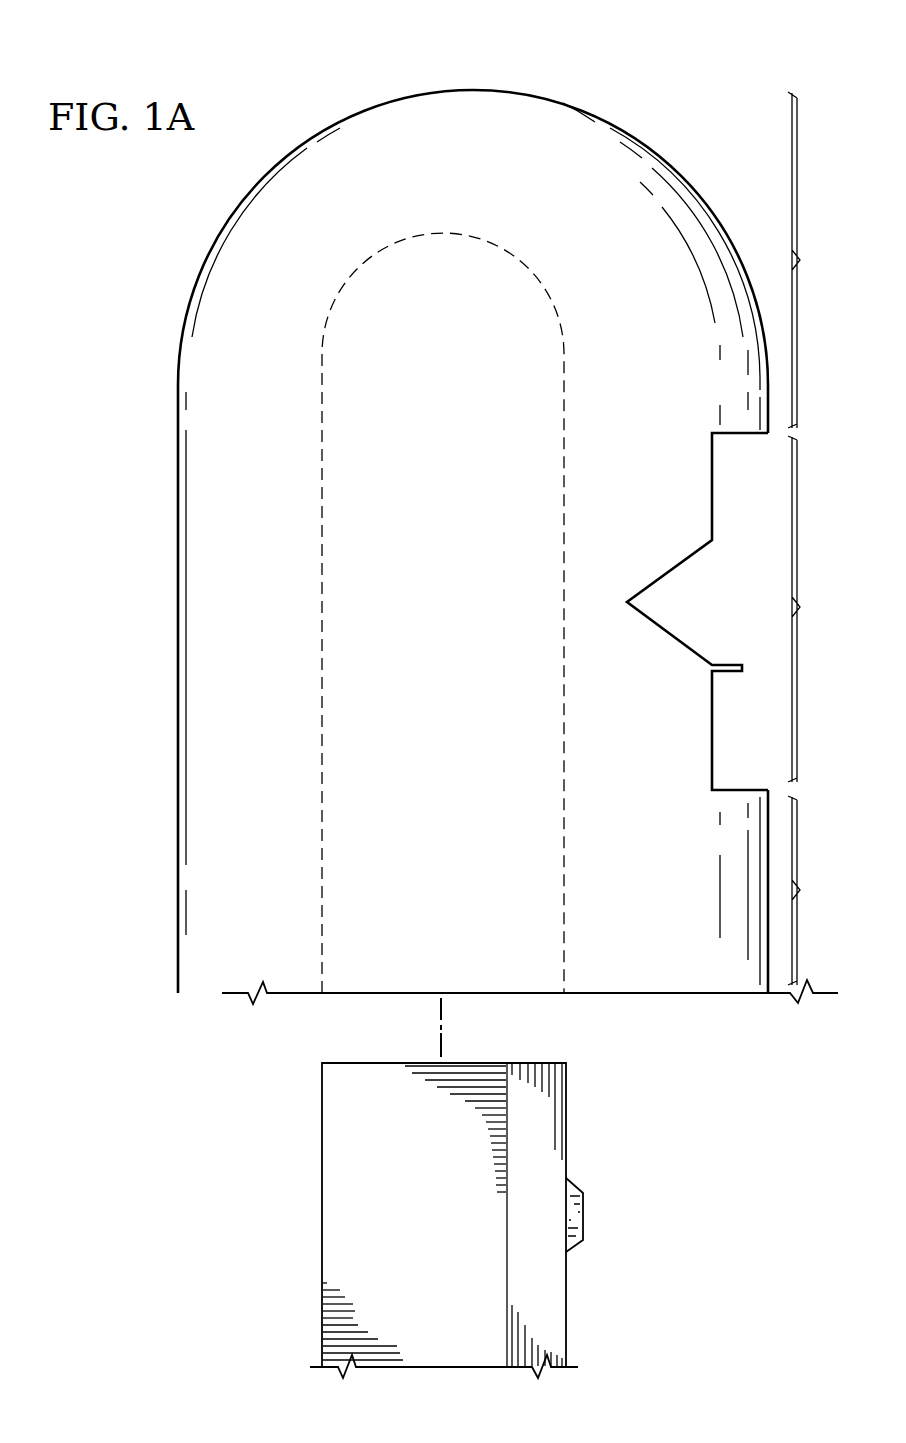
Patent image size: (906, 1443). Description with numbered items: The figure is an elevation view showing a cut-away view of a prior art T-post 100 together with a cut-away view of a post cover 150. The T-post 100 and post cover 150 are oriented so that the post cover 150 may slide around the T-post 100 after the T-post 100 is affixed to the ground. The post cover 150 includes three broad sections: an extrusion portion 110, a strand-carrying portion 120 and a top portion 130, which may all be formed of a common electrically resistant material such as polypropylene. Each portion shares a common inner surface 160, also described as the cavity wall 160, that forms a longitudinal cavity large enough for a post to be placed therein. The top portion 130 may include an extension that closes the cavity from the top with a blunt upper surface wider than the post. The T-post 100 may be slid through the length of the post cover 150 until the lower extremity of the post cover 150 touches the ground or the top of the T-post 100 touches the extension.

The post cover 150 is at (690, 72).
The top portion 130 is at (826, 260).
The strand-carrying portion 120 is at (745, 611).
The extrusion portion 110 is at (792, 891).
The inner surface 160 is at (562, 545).
The T-post 100 is at (299, 1232).